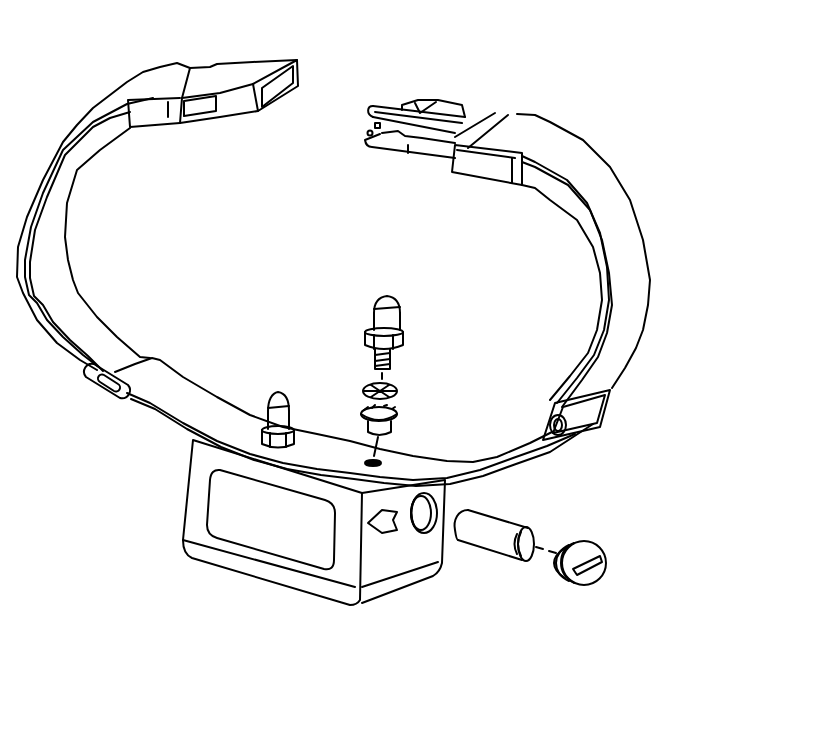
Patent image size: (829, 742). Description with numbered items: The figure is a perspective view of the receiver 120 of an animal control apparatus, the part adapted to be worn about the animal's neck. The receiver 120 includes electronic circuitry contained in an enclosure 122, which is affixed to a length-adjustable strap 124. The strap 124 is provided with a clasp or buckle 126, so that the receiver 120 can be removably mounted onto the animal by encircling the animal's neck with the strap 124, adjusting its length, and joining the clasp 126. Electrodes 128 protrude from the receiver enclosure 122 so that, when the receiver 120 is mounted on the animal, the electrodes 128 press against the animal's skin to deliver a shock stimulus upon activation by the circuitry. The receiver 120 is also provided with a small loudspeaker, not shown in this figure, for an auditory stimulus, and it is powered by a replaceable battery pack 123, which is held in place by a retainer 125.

The receiver 120 is at (593, 103).
The enclosure 122 is at (447, 498).
The replaceable battery pack 123 is at (525, 528).
The length-adjustable strap 124 is at (649, 311).
The retainer 125 is at (594, 542).
The clasp or buckle 126 is at (300, 76).
The electrodes 128 is at (380, 299).